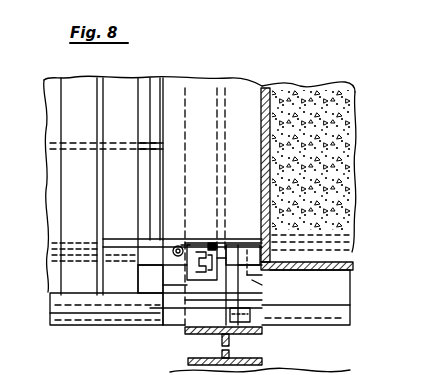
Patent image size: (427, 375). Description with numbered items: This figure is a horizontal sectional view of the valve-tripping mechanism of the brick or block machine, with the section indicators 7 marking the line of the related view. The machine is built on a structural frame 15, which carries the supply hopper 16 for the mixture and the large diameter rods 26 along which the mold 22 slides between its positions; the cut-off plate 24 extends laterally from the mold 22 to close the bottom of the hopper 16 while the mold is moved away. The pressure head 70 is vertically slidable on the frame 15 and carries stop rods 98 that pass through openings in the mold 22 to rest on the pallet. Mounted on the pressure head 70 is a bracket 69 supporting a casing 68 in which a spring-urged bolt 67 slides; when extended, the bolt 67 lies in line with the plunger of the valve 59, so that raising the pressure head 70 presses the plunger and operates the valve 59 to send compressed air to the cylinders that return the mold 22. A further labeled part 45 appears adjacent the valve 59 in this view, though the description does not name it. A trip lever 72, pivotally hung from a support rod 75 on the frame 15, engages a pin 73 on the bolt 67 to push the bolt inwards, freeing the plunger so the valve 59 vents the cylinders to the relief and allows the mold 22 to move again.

The mold 22 is at (168, 130).
The supply hopper 16 is at (259, 128).
The pin 73 is at (213, 243).
The trip lever 72 is at (229, 247).
The valve 59 is at (182, 248).
The stop rods 98 is at (176, 246).
The latch 45 is at (162, 279).
The pressure head 70 is at (118, 280).
The bracket 69 is at (175, 300).
The bolt 67 is at (200, 270).
The casing 68 is at (247, 270).
The support rod 75 is at (252, 281).
The large diameter rods 26 is at (340, 295).
The cut-off plate 24 is at (347, 313).
The structural frame 15 is at (240, 342).
The section line 7- 7 is at (60, 288).